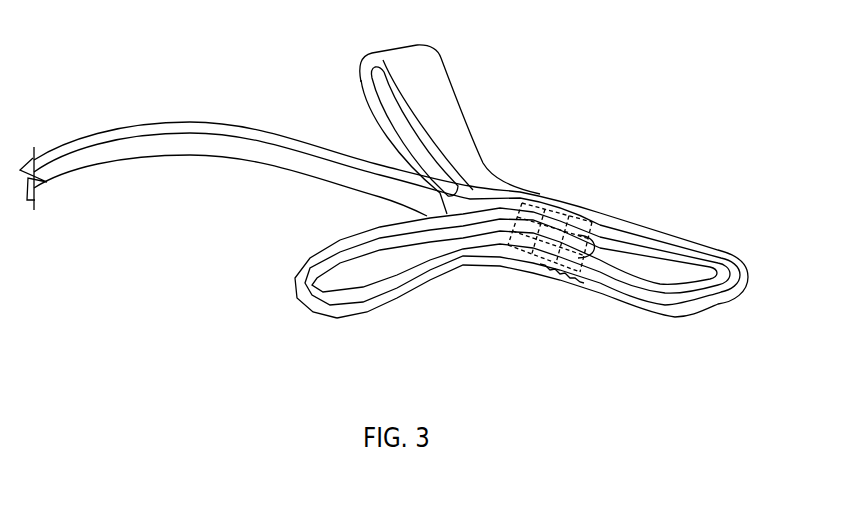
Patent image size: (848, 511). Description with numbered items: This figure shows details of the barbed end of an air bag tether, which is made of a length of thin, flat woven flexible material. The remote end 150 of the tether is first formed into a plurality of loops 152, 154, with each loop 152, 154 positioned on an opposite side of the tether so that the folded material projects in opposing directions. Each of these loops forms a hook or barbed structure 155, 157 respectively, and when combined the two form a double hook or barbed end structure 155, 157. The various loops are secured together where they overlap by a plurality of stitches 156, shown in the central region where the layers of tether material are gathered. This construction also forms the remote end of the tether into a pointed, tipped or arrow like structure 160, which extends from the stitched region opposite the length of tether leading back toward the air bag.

The remote end of the tether 150 is at (578, 175).
The loop 152 is at (428, 73).
The loop 154 is at (387, 304).
The hook or barbed structure 155 is at (375, 46).
The stitches 156 is at (590, 208).
The hook or barbed structure 157 is at (294, 316).
The pointed, tipped or arrow like structure 160 is at (706, 329).